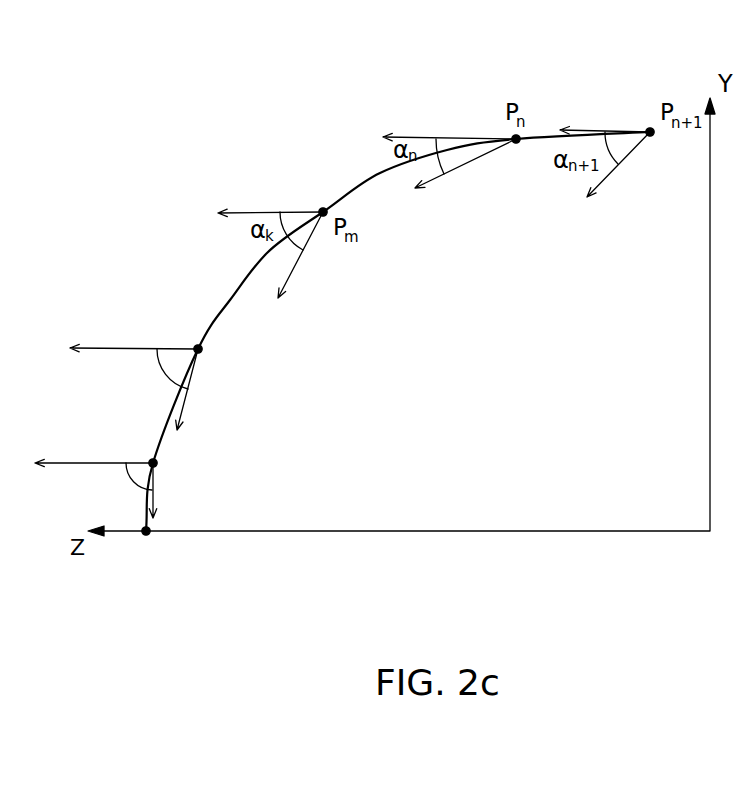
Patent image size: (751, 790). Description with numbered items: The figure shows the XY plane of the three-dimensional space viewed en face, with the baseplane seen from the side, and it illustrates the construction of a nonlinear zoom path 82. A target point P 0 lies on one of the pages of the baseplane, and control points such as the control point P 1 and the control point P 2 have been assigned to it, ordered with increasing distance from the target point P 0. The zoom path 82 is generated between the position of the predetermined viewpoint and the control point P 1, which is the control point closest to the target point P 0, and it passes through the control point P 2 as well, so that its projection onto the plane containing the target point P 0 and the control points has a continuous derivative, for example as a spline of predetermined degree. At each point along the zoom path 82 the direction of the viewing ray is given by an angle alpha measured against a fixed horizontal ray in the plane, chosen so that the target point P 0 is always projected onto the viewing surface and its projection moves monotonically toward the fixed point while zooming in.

The nonlinear zoom path 82 is at (543, 132).
The point P0 (start point of path) 0 is at (160, 547).
The point P1 on path 1 is at (110, 485).
The point P2 on path 2 is at (152, 384).